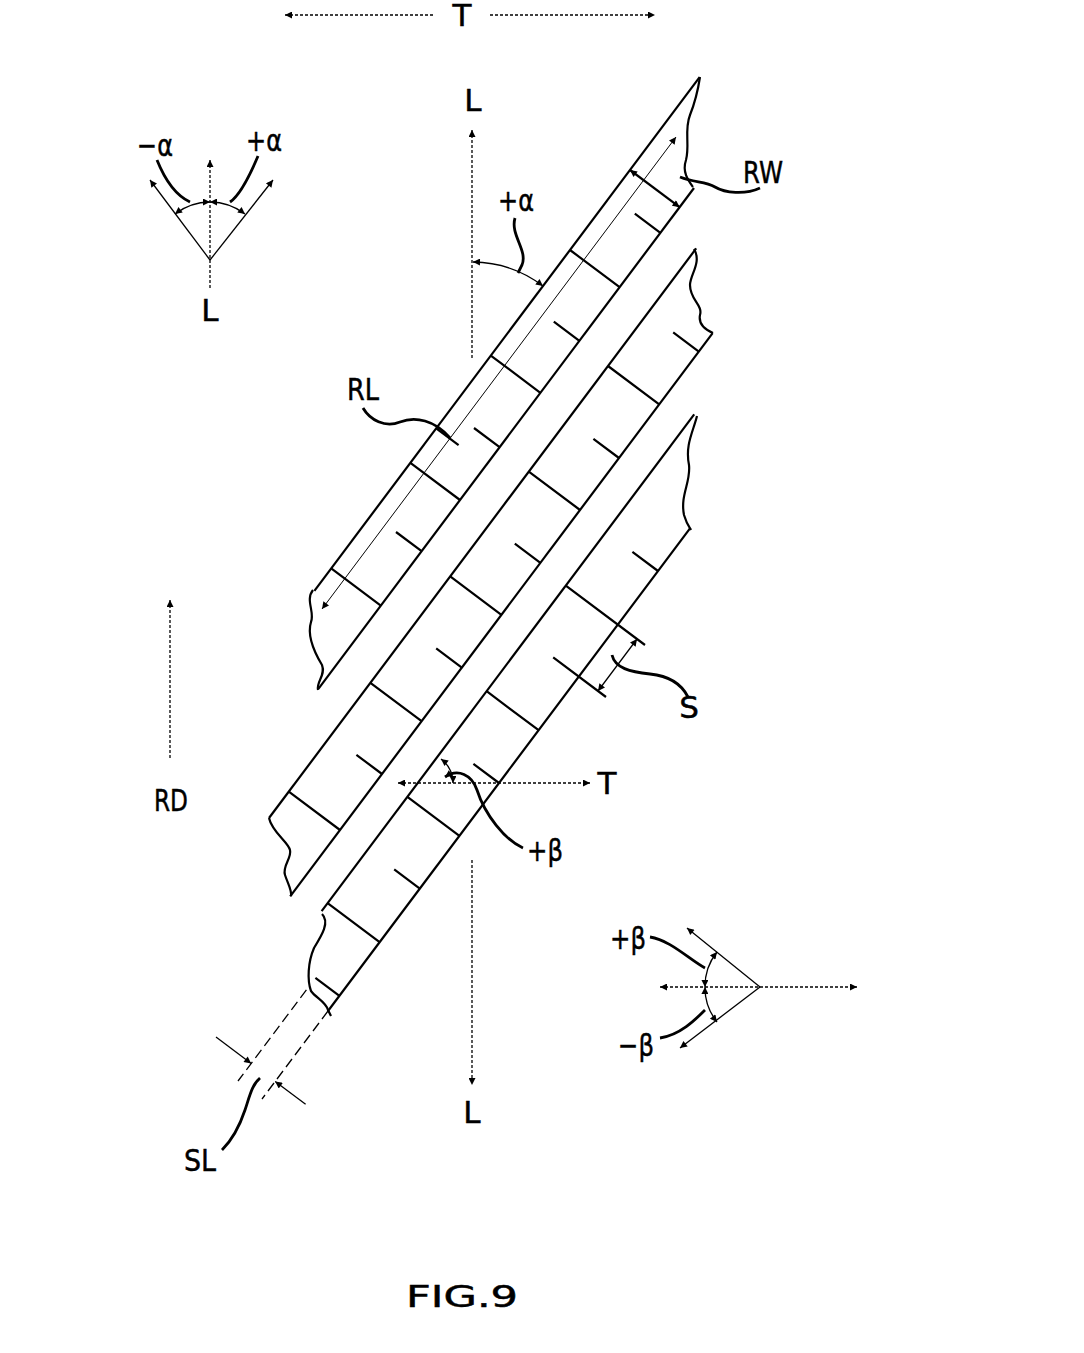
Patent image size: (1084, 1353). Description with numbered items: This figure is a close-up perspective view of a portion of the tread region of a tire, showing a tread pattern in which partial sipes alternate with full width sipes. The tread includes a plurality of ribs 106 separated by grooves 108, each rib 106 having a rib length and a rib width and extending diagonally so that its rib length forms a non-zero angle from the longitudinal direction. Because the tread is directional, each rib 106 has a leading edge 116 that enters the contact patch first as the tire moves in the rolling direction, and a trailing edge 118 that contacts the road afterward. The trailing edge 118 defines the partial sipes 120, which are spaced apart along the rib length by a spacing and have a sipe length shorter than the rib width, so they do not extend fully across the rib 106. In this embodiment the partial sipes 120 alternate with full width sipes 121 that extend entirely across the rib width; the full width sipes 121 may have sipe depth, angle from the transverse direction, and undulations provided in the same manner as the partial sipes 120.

The rib 106 is at (668, 310).
The groove 108 is at (695, 222).
The leading edge 116 is at (651, 460).
The trailing edge 118 is at (650, 592).
The partial sipe 120 is at (486, 428).
The full width sipe 121 is at (440, 494).